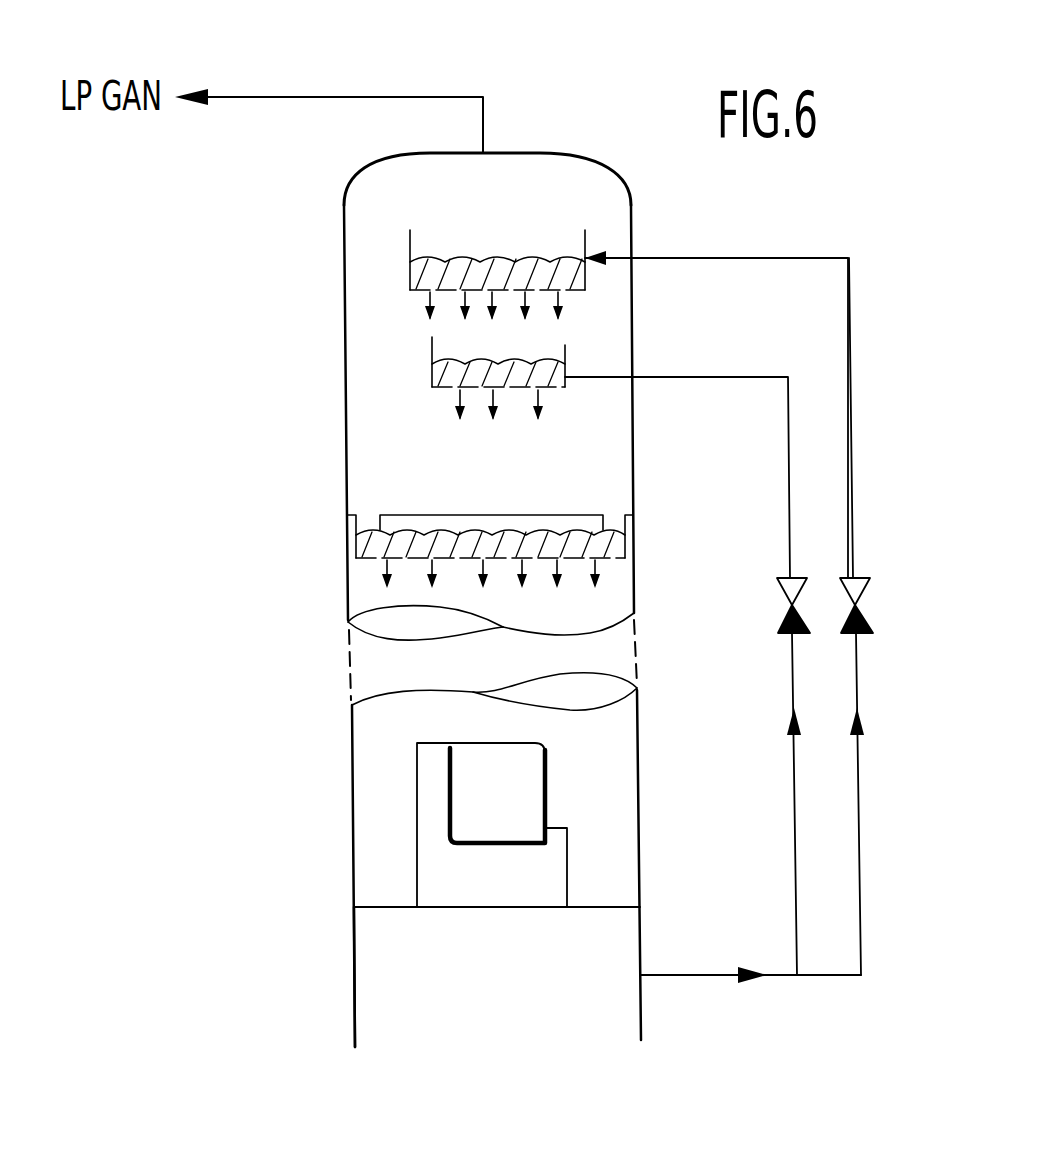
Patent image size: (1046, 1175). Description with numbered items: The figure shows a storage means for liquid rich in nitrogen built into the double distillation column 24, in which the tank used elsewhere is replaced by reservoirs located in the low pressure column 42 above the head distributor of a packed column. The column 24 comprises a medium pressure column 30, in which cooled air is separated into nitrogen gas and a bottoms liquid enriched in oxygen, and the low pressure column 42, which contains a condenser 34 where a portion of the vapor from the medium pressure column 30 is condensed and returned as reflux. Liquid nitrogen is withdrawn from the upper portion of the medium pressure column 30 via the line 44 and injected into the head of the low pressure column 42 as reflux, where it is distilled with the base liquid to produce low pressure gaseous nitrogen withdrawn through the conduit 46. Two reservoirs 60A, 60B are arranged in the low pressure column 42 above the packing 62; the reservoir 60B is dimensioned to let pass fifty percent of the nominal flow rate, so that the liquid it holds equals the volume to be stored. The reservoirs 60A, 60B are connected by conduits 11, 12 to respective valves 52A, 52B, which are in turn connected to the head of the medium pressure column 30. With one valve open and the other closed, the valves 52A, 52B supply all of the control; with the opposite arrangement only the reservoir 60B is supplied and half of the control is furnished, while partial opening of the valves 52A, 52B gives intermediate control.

The double distillation column 24 is at (383, 600).
The low pressure column 42 is at (345, 360).
The conduit 46 is at (383, 97).
The reservoir 60B is at (415, 268).
The reservoir 60A is at (430, 375).
The packing section 62 is at (378, 545).
The condenser 34 is at (545, 775).
The medium pressure column 30 is at (354, 968).
The line 44 is at (680, 975).
The conduit 11 is at (687, 676).
The conduit 12 is at (765, 613).
The valve 52A is at (783, 616).
The valve 52B is at (862, 622).